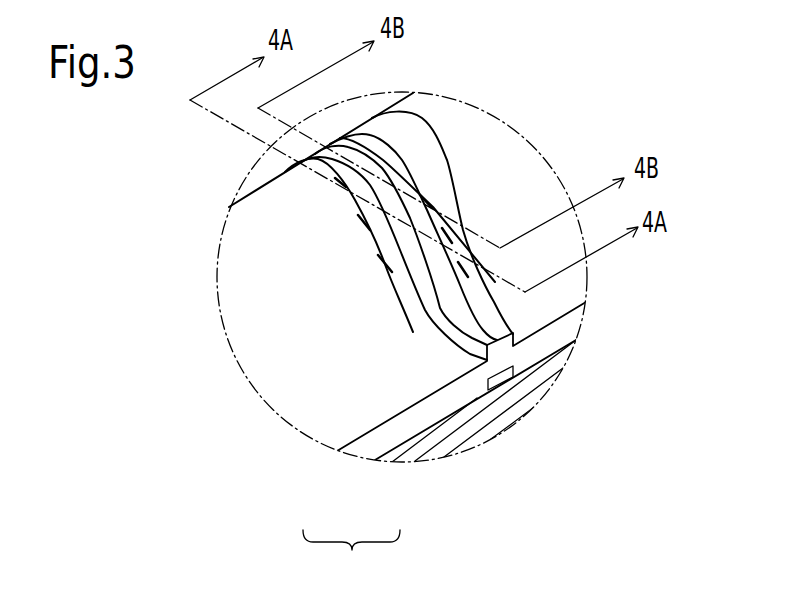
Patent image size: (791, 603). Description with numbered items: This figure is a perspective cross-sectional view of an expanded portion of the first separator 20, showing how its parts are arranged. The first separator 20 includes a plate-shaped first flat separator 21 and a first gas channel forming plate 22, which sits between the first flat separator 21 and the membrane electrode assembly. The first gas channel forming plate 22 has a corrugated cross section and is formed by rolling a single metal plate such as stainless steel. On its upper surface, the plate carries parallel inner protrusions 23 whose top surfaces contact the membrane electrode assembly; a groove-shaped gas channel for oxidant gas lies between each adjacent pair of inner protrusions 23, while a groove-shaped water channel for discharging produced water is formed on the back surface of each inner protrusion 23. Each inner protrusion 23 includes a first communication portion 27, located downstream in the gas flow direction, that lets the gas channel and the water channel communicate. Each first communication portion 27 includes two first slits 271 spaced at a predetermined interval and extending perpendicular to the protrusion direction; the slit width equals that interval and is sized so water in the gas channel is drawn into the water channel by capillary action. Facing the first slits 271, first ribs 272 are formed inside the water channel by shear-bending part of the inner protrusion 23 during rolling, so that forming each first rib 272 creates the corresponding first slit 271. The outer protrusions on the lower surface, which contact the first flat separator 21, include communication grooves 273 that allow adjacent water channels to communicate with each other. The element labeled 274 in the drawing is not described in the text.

The first separator 20 is at (351, 557).
The first flat separator 21 is at (447, 450).
The first gas channel forming plate 22 is at (321, 416).
The inner protrusion 23 is at (259, 200).
The first communication portion 27 is at (399, 196).
The first slit 271 is at (378, 141).
The first rib 272 is at (450, 258).
The communication groove 273 is at (500, 384).
The fin rib 274 is at (400, 198).